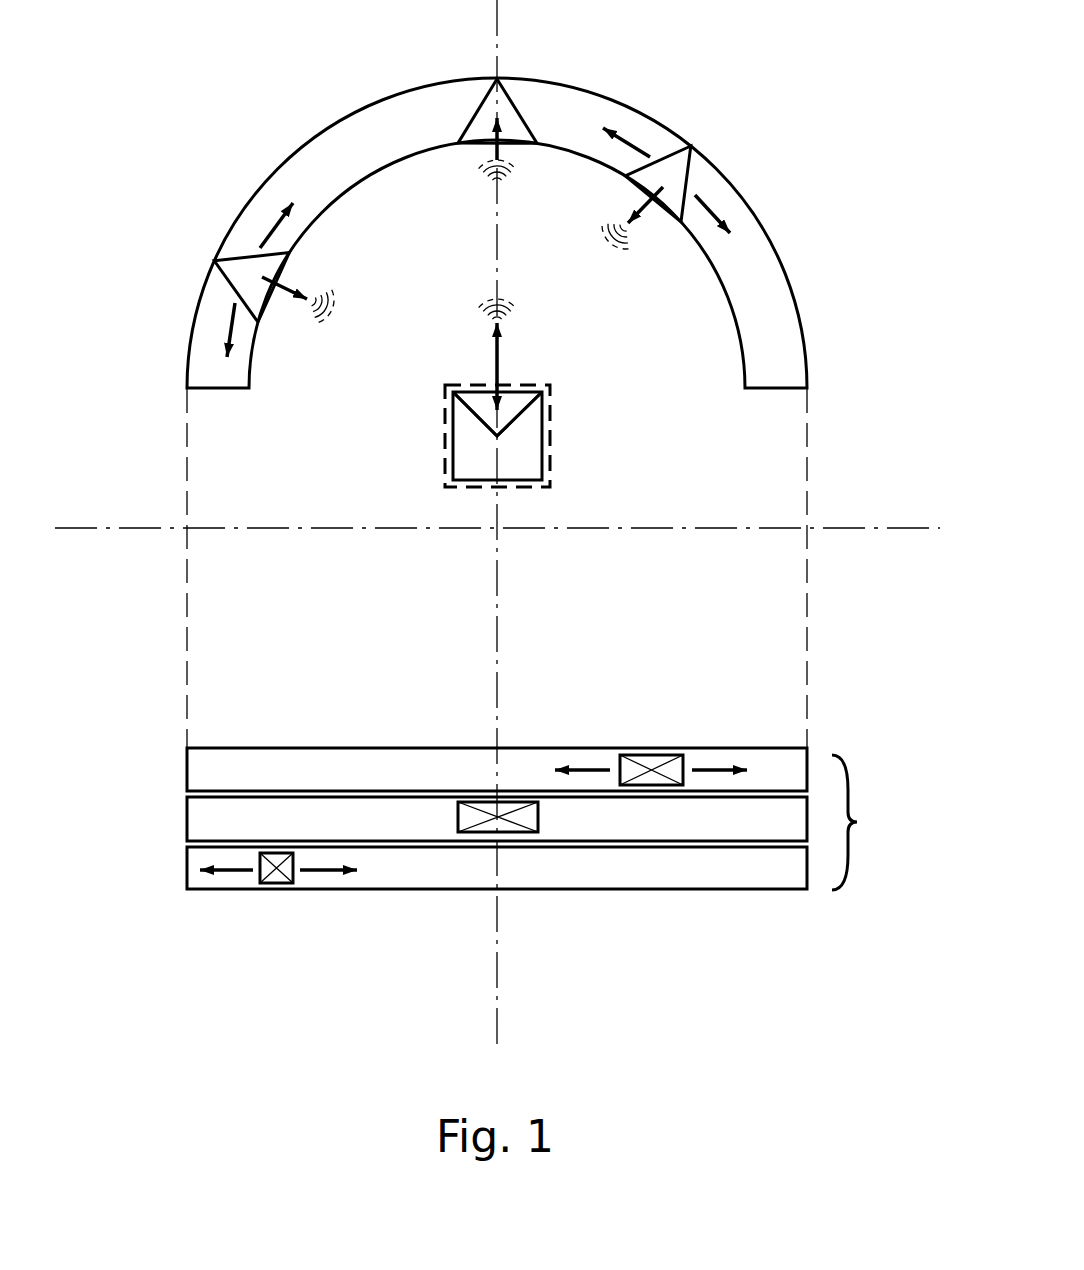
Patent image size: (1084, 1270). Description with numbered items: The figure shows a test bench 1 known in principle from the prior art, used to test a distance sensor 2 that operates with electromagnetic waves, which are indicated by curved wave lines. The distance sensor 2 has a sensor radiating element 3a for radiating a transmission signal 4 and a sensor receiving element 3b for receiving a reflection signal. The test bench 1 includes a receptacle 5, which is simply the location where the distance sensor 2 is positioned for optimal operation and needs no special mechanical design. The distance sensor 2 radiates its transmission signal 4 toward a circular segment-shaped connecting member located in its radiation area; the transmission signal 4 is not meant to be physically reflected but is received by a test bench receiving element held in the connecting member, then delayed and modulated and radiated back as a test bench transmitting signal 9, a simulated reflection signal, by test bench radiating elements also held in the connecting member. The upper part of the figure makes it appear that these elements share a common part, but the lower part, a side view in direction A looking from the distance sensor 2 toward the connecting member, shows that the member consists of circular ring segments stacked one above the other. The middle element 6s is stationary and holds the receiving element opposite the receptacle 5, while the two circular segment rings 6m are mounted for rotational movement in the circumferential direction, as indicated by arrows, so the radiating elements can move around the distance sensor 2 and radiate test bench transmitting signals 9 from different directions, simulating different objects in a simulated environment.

The test bench 1 is at (222, 118).
The distance sensor 2 is at (497, 436).
The sensor radiating element 3a is at (519, 403).
The sensor receiving element 3b is at (497, 414).
The transmission signal 4 is at (513, 305).
The receptacle 5 is at (551, 458).
The movable circular segment rings 6m is at (187, 772).
The stationary middle element 6s is at (187, 815).
The test bench transmitting signal 9 is at (330, 295).
The viewing direction A is at (673, 528).